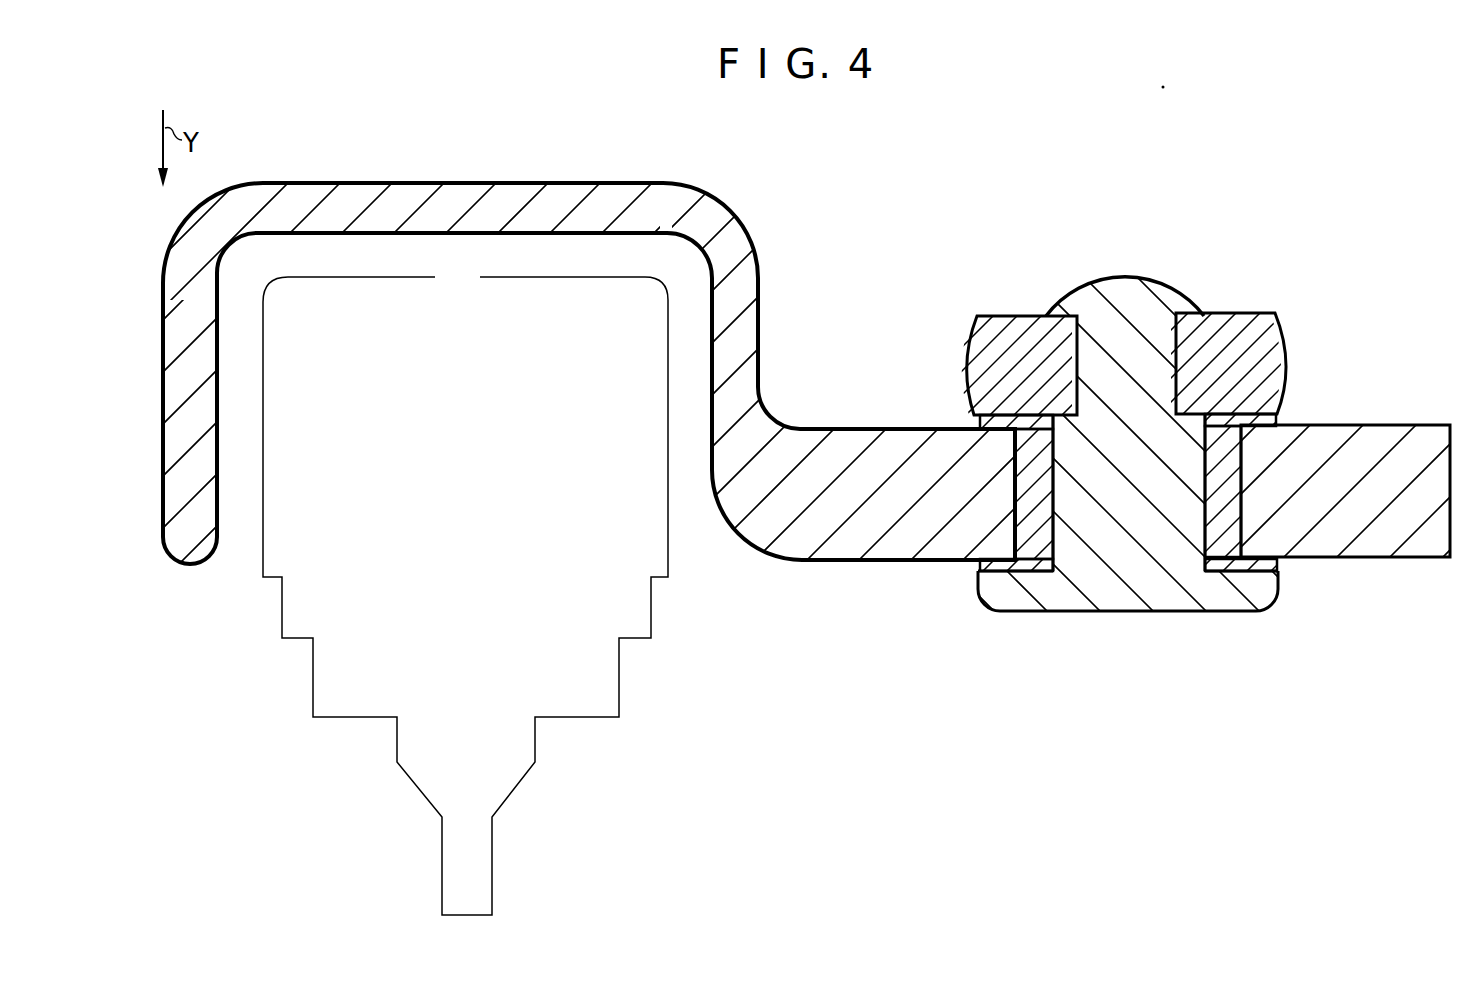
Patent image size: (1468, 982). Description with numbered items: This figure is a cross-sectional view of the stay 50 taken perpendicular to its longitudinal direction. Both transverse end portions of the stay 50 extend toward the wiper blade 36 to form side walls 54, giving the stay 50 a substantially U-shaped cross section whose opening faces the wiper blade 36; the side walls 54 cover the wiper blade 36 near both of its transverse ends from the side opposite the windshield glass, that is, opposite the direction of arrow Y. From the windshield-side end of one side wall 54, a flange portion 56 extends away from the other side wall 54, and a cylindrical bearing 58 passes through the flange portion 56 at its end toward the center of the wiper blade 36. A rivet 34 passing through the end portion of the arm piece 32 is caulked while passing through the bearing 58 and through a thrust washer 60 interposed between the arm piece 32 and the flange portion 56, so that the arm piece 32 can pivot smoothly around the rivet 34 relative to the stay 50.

The stay 50 is at (520, 183).
The side walls 54 is at (760, 352).
The wiper blade 36 is at (264, 608).
The rivet 34 is at (1128, 277).
The arm piece 32 is at (1283, 328).
The thrust washer 60 is at (977, 422).
The cylindrical bearing 58 is at (1242, 512).
The flange portion 56 is at (1378, 425).